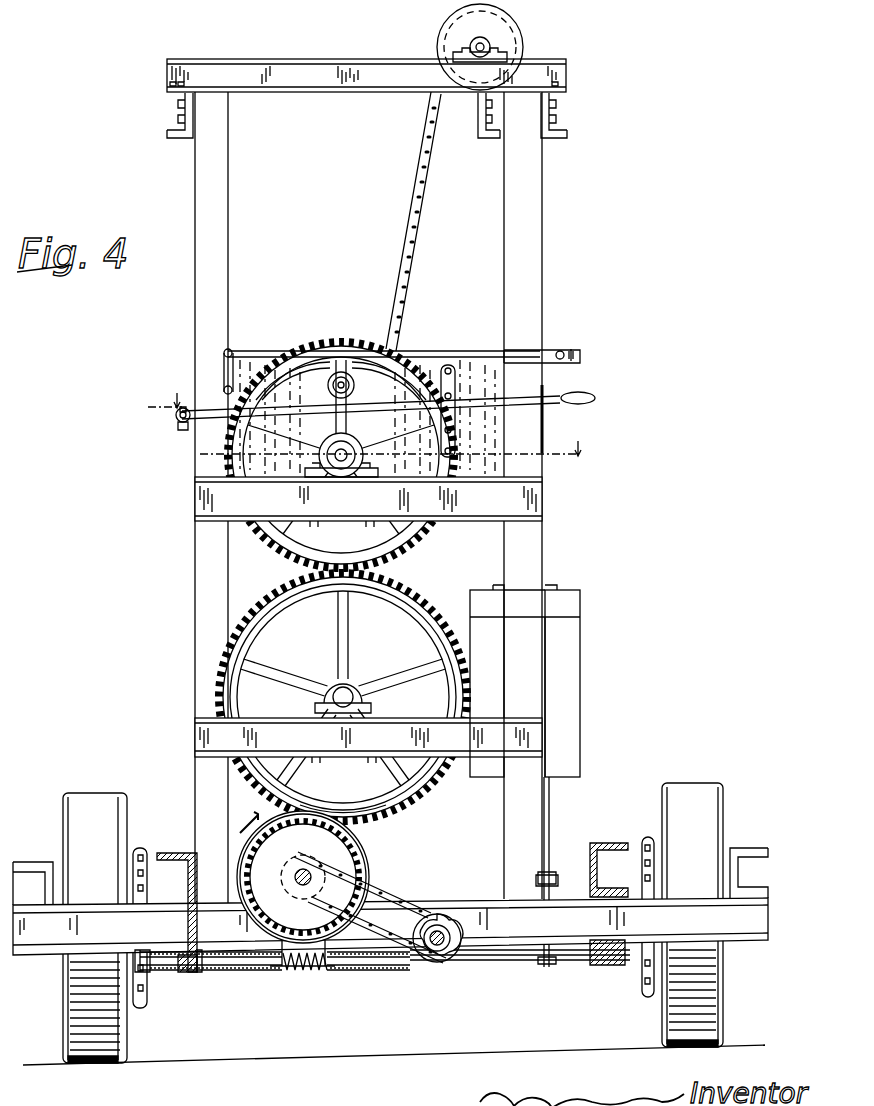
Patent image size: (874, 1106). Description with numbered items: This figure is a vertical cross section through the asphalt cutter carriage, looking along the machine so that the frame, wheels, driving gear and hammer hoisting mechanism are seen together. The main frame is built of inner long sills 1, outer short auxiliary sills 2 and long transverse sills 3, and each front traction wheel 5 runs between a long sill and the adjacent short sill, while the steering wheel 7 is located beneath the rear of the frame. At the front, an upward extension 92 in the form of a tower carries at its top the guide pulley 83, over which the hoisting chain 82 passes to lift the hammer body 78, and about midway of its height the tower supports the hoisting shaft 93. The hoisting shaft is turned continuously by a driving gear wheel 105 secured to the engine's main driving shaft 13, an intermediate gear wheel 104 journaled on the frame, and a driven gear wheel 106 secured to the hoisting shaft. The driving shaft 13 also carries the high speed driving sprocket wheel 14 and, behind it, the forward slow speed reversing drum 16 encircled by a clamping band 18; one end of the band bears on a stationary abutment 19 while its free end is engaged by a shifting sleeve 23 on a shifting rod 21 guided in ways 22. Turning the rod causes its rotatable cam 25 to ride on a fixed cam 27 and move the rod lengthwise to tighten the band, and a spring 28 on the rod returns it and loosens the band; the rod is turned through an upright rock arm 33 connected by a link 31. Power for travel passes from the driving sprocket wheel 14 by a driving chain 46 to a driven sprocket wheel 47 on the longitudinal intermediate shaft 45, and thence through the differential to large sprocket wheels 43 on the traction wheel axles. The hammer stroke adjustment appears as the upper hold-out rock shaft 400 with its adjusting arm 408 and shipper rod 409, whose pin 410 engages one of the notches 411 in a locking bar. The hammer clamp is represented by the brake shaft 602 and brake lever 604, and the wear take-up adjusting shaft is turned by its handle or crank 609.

The inner long sill 1 is at (186, 846).
The outer short auxiliary sill 2 is at (30, 868).
The long transverse sill 3 is at (390, 926).
The front traction wheel 5 is at (393, 923).
The steering wheel 7 is at (367, 427).
The main longitudinal driving shaft 13 is at (296, 880).
The high speed driving sprocket wheel 14 is at (298, 864).
The forward slow speed motion reversing drum 16 is at (301, 824).
The clamping band 18 is at (369, 862).
The stationary abutment 19 is at (276, 972).
The shifting rod 21 is at (506, 962).
The way 22 is at (182, 957).
The shifting sleeve 23 is at (366, 972).
The rotatable cam 25 is at (150, 975).
The fixed cam 27 is at (200, 975).
The spring 28 is at (308, 972).
The link 31 is at (581, 600).
The upright rock arm 33 is at (548, 873).
The large sprocket wheel 43 is at (148, 880).
The longitudinal intermediate shaft 45 is at (436, 964).
The driving chain 46 is at (399, 902).
The driven sprocket wheel 47 is at (425, 932).
The hammer body 78 is at (572, 739).
The hoisting chain 82 is at (418, 226).
The guide pulley 83 is at (511, 24).
The upward extension 92 is at (195, 277).
The hoisting shaft 93 is at (335, 454).
The intermediate gear wheel 104 is at (410, 627).
The driving gear wheel 105 is at (352, 826).
The driven gear wheel 106 is at (349, 323).
The upper hold-out rock shaft 400 is at (178, 425).
The adjusting arm 408 is at (224, 370).
The shipper rod 409 is at (463, 352).
The pin 410 is at (562, 350).
The notches 411 is at (574, 352).
The brake shaft 602 is at (179, 410).
The brake lever 604 is at (596, 399).
The handle or crank 609 is at (455, 386).